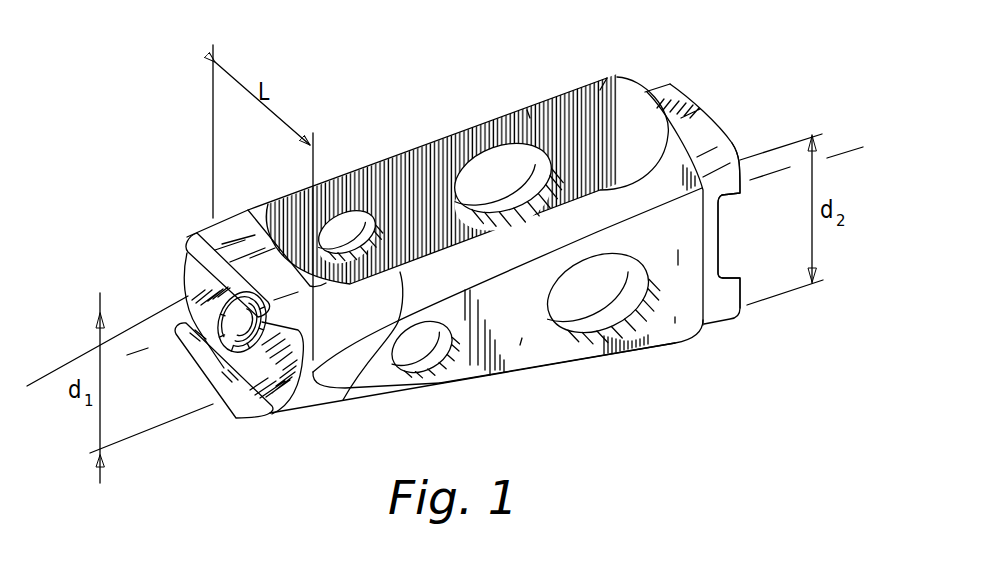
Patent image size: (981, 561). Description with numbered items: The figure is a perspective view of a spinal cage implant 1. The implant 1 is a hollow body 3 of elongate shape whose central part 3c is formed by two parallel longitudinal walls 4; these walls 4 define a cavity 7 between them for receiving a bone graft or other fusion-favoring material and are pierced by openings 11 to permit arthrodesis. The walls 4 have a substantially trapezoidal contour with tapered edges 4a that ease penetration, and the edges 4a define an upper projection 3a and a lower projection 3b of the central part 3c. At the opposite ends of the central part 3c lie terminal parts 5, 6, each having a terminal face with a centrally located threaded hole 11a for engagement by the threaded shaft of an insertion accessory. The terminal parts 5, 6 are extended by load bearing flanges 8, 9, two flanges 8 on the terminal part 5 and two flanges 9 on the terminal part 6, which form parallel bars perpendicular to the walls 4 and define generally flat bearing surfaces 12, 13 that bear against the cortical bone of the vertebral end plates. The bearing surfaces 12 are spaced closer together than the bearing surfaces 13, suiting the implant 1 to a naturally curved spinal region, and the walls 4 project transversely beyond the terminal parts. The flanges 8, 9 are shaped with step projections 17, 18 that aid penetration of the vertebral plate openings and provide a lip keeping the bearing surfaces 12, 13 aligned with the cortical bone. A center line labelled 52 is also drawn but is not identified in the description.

The spinal cage implant 1 is at (642, 391).
The hollow body 3 is at (606, 75).
The upper projection 3a is at (447, 133).
The lower projection 3b is at (564, 369).
The central part 3c is at (679, 345).
The longitudinal walls 4 is at (527, 110).
The tapered edges 4a is at (372, 177).
The terminal part 5 is at (173, 364).
The terminal part 6 is at (734, 231).
The cavity 7 is at (402, 208).
The load bearing flanges 8 is at (178, 245).
The load bearing flanges 9 is at (749, 142).
The openings 11 is at (500, 177).
The threaded hole 11a is at (207, 380).
The bearing surfaces 12 is at (185, 265).
The bearing surfaces 13 is at (693, 128).
The step projection 17 is at (258, 220).
The step projection 18 is at (645, 91).
The rod axis 52 is at (852, 148).